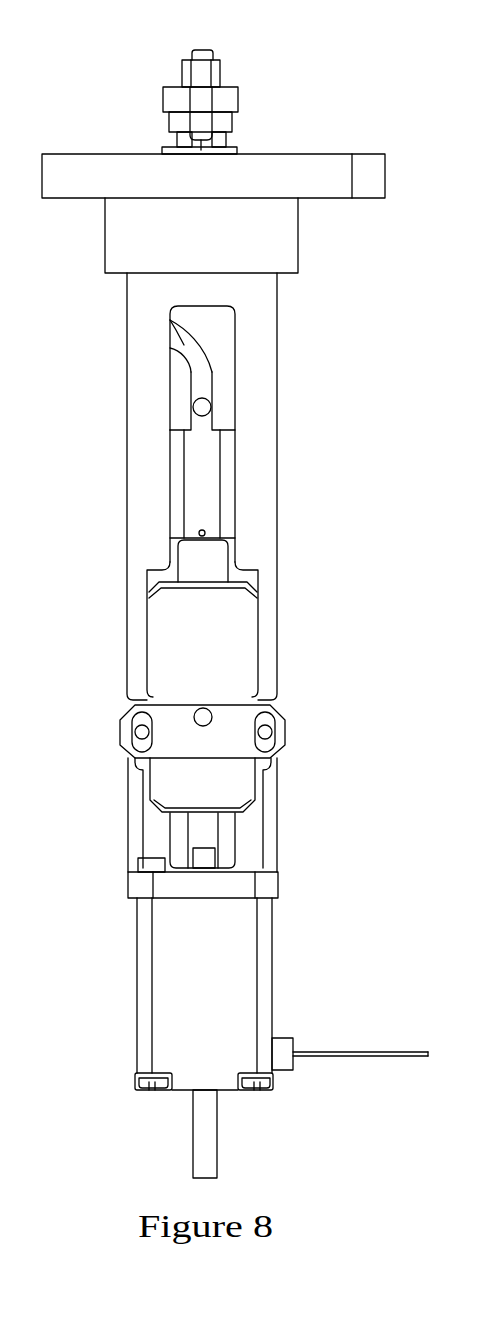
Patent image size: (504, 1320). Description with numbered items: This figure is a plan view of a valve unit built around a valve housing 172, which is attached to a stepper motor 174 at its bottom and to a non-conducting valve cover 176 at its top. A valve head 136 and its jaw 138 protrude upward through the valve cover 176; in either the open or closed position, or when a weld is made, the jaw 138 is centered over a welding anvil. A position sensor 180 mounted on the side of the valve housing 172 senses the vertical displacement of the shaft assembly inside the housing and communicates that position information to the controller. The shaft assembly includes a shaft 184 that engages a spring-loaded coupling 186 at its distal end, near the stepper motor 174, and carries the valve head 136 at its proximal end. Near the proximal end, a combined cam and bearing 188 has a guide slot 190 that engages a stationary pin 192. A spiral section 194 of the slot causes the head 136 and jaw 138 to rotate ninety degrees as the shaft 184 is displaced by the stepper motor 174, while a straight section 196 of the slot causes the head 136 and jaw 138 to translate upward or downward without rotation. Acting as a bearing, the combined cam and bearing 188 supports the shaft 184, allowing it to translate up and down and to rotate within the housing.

The valve head 136 is at (238, 102).
The jaw 138 is at (213, 120).
The valve cover 176 is at (330, 153).
The valve housing 172 is at (125, 528).
The combined cam and bearing 188 is at (218, 330).
The guide slot 190 is at (200, 365).
The stationary pin 192 is at (211, 407).
The spiral section 194 is at (180, 343).
The straight section 196 is at (197, 387).
The shaft 184 is at (220, 476).
The spring-loaded coupling 186 is at (230, 562).
The position sensor 180 is at (233, 617).
The stepper motor 174 is at (235, 970).